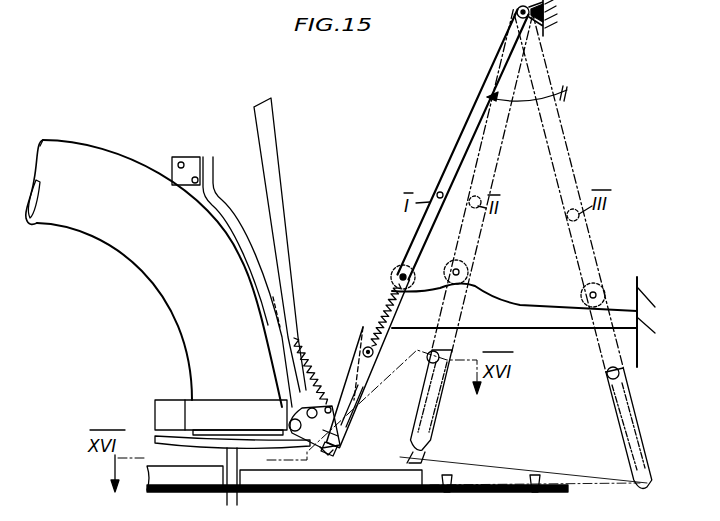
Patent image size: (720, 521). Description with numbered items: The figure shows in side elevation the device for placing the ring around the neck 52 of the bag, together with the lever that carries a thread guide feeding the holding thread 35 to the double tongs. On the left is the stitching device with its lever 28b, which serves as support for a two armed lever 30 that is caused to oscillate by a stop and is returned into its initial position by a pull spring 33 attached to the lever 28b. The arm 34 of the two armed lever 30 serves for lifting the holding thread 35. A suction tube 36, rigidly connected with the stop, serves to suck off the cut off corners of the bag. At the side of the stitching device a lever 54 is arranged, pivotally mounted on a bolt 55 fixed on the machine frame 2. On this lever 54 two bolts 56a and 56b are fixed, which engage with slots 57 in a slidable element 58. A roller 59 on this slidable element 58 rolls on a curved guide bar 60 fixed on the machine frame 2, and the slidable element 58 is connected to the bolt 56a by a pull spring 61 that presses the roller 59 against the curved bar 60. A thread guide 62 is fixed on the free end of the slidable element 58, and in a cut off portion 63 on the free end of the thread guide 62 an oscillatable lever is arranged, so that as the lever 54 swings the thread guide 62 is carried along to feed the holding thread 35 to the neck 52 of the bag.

The machine frame 2 is at (622, 189).
The lever 28b is at (281, 217).
The two armed lever 30 is at (300, 408).
The pull spring 33 is at (312, 366).
The arm 34 is at (273, 430).
The holding thread 35 is at (443, 456).
The suction tube 36 is at (154, 273).
The neck of the bag 52 is at (530, 480).
The lever 54 is at (470, 126).
The bolt 55 is at (516, 13).
The bolt 56a is at (420, 344).
The bolt 56b is at (438, 190).
The slots 57 is at (350, 397).
The slidable element 58 is at (362, 356).
The roller 59 is at (398, 276).
The curved guide bar 60 is at (518, 308).
The pull spring 61 is at (384, 312).
The thread guide 62 is at (338, 438).
The cut off portion 63 is at (323, 453).